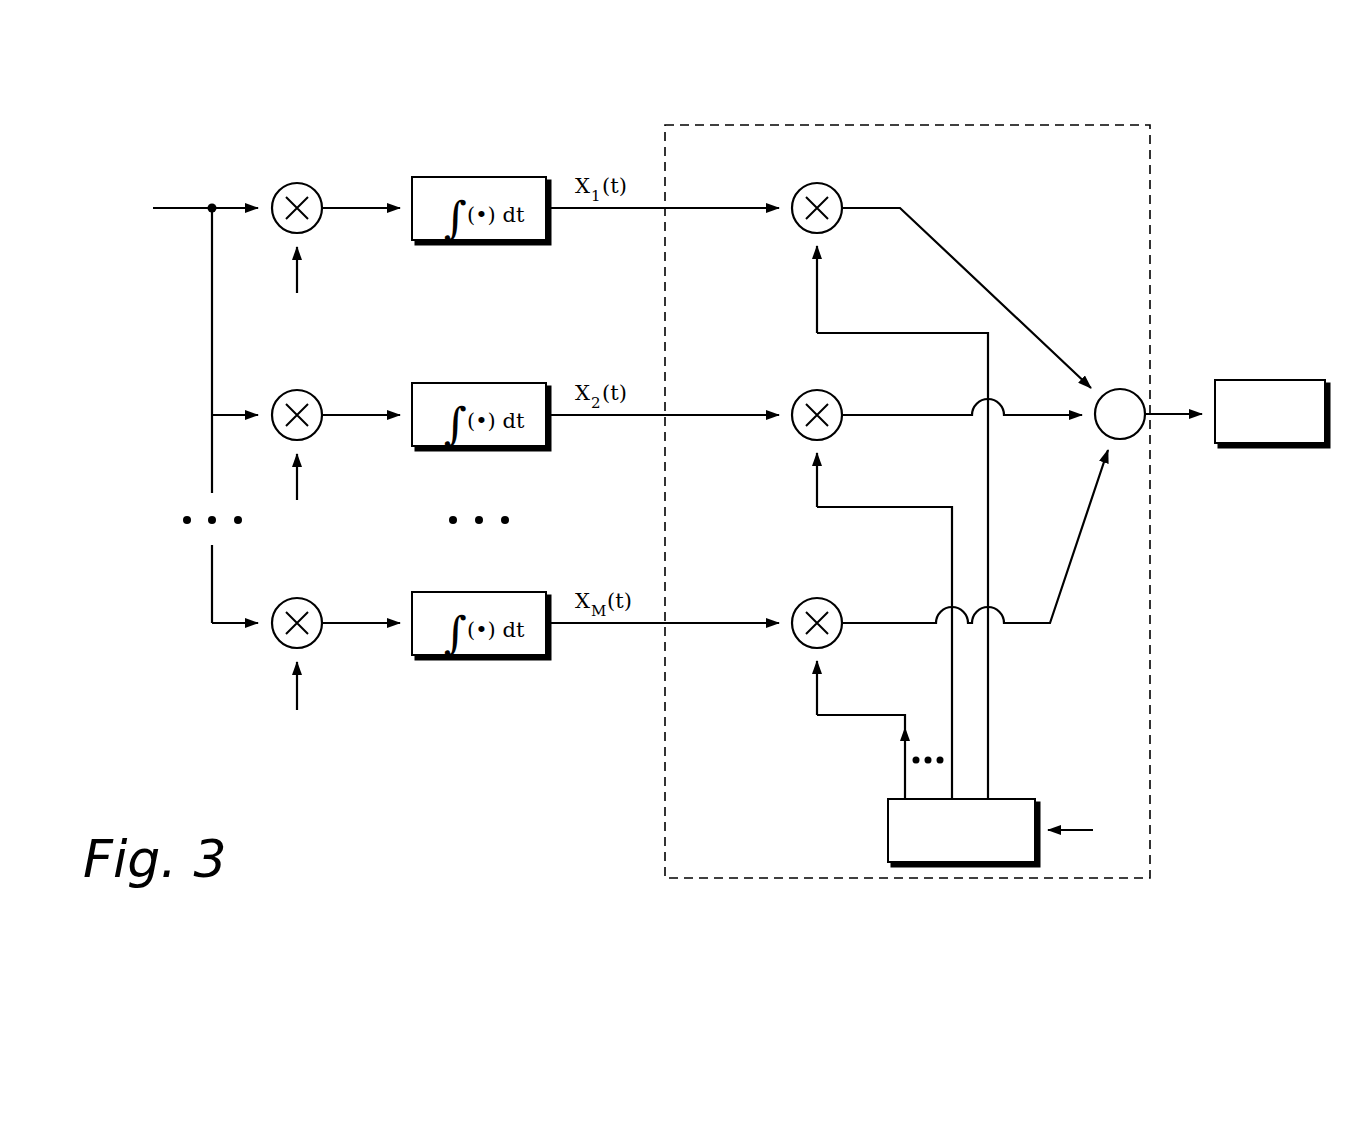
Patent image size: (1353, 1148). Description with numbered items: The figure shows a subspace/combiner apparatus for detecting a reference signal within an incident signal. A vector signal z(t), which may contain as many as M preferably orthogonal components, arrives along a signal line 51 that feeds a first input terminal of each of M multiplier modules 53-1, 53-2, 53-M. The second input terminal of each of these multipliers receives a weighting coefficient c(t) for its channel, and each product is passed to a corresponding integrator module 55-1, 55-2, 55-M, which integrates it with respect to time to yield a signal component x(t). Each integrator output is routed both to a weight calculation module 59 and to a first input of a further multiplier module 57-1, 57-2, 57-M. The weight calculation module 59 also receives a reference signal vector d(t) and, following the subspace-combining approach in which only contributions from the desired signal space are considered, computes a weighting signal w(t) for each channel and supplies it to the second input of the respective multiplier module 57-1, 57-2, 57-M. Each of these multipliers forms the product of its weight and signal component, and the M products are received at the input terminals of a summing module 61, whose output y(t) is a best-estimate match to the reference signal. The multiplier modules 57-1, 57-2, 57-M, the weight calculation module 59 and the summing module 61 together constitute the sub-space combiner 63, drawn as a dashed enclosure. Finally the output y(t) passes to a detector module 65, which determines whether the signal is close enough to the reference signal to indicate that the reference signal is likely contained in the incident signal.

The signal line 51 is at (176, 210).
The multiplier module 53-1 is at (300, 182).
The multiplier module 53-2 is at (300, 389).
The multiplier module 53-M is at (300, 597).
The integrator module 55-1 is at (420, 177).
The integrator module 55-2 is at (420, 383).
The integrator module 55-M is at (420, 592).
The multiplier module 57-1 is at (836, 226).
The multiplier module 57-2 is at (836, 433).
The multiplier module 57-M is at (836, 641).
The weight calculation module 59 is at (888, 832).
The summing module 61 is at (1118, 390).
The sub-space combiner 63 is at (968, 125).
The detector module 65 is at (1268, 380).